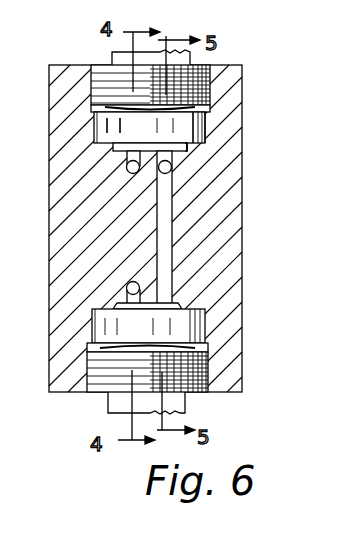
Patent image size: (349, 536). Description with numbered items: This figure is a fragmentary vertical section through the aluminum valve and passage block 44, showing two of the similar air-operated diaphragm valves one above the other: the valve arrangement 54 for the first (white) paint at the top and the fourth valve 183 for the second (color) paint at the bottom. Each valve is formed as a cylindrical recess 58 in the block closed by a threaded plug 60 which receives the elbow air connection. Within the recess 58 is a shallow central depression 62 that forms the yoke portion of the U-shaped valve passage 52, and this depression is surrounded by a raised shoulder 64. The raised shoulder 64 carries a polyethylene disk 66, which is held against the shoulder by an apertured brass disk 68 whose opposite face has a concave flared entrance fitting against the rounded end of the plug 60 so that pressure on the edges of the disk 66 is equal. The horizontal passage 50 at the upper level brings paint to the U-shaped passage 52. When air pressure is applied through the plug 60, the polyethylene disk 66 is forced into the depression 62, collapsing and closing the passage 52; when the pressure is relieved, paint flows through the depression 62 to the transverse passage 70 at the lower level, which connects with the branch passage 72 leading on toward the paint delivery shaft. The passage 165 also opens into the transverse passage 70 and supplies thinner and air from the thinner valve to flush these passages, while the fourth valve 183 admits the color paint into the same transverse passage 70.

The valve and passage block 44 is at (47, 302).
The valve arrangement 54 is at (108, 69).
The threaded plug 60 is at (91, 82).
The cylindrical recess 58 is at (95, 127).
The brass disk 68 is at (108, 133).
The polyethylene disk 66 is at (183, 133).
The shallow central depression 62 is at (118, 149).
The raised shoulder 64 is at (185, 150).
The U-shaped valve passage 52 is at (178, 152).
The transverse passage 70 is at (166, 229).
The passage 165 is at (174, 167).
The horizontal passage 50 is at (128, 173).
The branch passage 72 is at (134, 282).
The fourth valve 183 is at (106, 379).